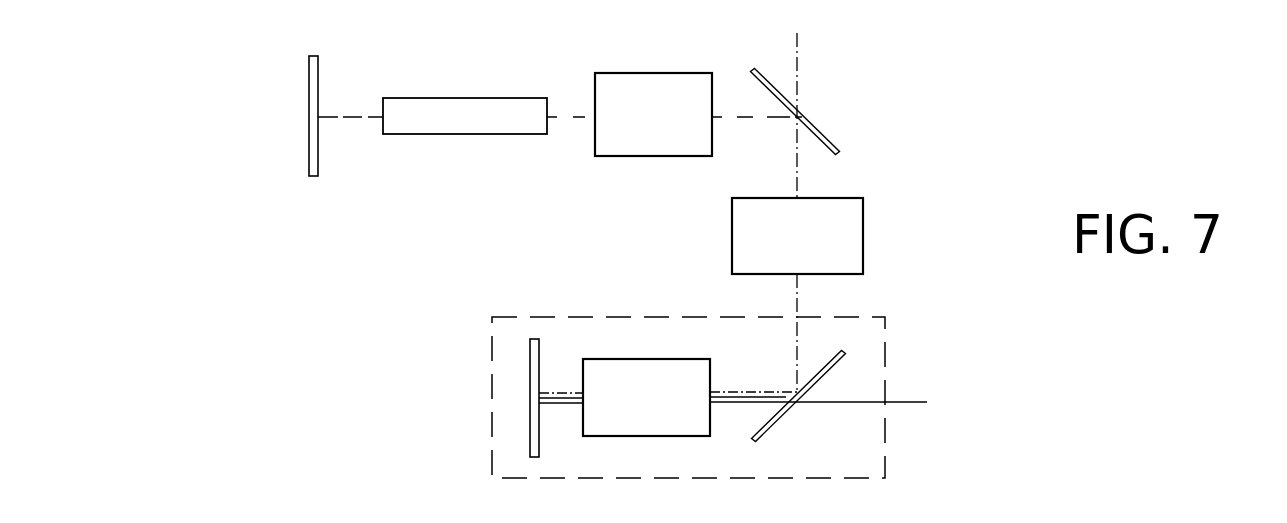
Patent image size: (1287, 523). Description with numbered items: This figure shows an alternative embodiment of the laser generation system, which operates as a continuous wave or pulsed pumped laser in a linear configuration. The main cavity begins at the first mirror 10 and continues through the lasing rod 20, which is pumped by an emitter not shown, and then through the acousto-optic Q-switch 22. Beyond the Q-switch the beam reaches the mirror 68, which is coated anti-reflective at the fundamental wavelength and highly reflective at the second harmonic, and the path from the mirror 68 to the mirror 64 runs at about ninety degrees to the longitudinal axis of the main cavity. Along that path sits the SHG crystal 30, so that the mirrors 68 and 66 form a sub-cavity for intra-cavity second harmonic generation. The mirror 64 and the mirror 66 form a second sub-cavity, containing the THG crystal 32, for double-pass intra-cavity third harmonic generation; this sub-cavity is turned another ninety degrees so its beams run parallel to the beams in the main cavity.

The first mirror 10 is at (309, 79).
The lasing rod 20 is at (418, 106).
The acousto-optic Q-switch 22 is at (623, 143).
The SHG crystal 30 is at (863, 229).
The THG crystal 32 is at (694, 371).
The mirror 64 is at (782, 415).
The mirror 66 is at (540, 440).
The mirror 68 is at (823, 138).